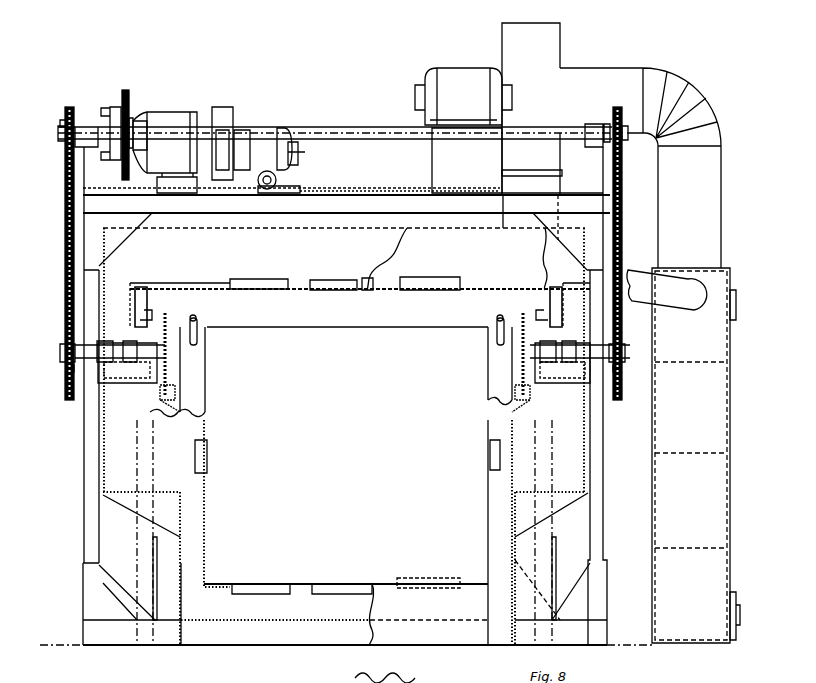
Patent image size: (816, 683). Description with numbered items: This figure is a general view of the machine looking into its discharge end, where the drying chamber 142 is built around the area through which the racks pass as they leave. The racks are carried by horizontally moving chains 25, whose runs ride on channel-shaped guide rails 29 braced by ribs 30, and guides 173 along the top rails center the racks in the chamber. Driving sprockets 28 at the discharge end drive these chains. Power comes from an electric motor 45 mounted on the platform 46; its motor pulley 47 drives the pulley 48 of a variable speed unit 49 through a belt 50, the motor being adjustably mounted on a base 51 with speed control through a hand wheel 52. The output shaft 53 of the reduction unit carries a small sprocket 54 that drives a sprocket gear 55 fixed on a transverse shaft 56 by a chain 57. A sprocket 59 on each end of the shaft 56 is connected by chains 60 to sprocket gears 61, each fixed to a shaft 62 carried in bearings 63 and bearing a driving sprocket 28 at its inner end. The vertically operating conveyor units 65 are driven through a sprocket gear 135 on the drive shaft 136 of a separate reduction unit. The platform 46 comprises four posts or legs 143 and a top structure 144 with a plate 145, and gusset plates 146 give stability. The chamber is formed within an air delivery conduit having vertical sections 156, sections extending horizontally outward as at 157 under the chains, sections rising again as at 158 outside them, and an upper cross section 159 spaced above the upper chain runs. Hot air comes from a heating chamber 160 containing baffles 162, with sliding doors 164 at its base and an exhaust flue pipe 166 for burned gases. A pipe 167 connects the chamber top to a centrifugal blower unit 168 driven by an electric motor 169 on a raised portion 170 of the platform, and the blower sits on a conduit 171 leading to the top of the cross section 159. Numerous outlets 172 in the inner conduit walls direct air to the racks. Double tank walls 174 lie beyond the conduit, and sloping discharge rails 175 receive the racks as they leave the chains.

The horizontally moving chains 25 is at (168, 316).
The driving sprockets 28 is at (517, 348).
The channel-shaped guide rails 29 is at (196, 319).
The ribs 30 is at (209, 327).
The electric motor 45 is at (299, 154).
The platform 46 is at (337, 189).
The motor pulley 47 is at (274, 140).
The pulley 48 is at (244, 118).
The variable speed unit 49 is at (173, 116).
The belt 50 is at (226, 110).
The base 51 is at (553, 552).
The hand wheel 52 is at (277, 178).
The output shaft 53 is at (142, 128).
The small sprocket 54 is at (132, 126).
The sprocket gear 55 is at (114, 106).
The shaft 56 is at (57, 132).
The chain 57 is at (125, 91).
The sprocket 59 is at (608, 124).
The chains 60 is at (620, 191).
The sprocket gears 61 is at (621, 348).
The shaft 62 is at (612, 355).
The bearings 63 is at (138, 347).
The vertically operating conveyor units 65 is at (585, 347).
The sprocket gear 135 is at (297, 623).
The drive shaft 136 is at (193, 542).
The drying chamber 142 is at (335, 237).
The posts or legs 143 is at (90, 466).
The top structure 144 is at (287, 204).
The plate 145 is at (428, 193).
The gusset plates 146 is at (105, 610).
The vertical sections 156 is at (500, 502).
The horizontal outward sections 157 is at (510, 422).
The upward sections 158 is at (570, 300).
The upper cross section 159 is at (218, 254).
The heating chamber 160 is at (672, 507).
The baffles 162 is at (703, 362).
The sliding doors 164 is at (733, 620).
The exhaust flue pipe 166 is at (688, 292).
The pipe 167 is at (707, 221).
The centrifugal blower unit 168 is at (538, 62).
The electric motor 169 is at (461, 85).
The raised portion 170 is at (467, 160).
The conduit 171 is at (540, 187).
The outlets 172 is at (490, 457).
The guides 173 is at (540, 312).
The double tank walls 174 is at (495, 375).
The discharge rails 175 is at (495, 333).